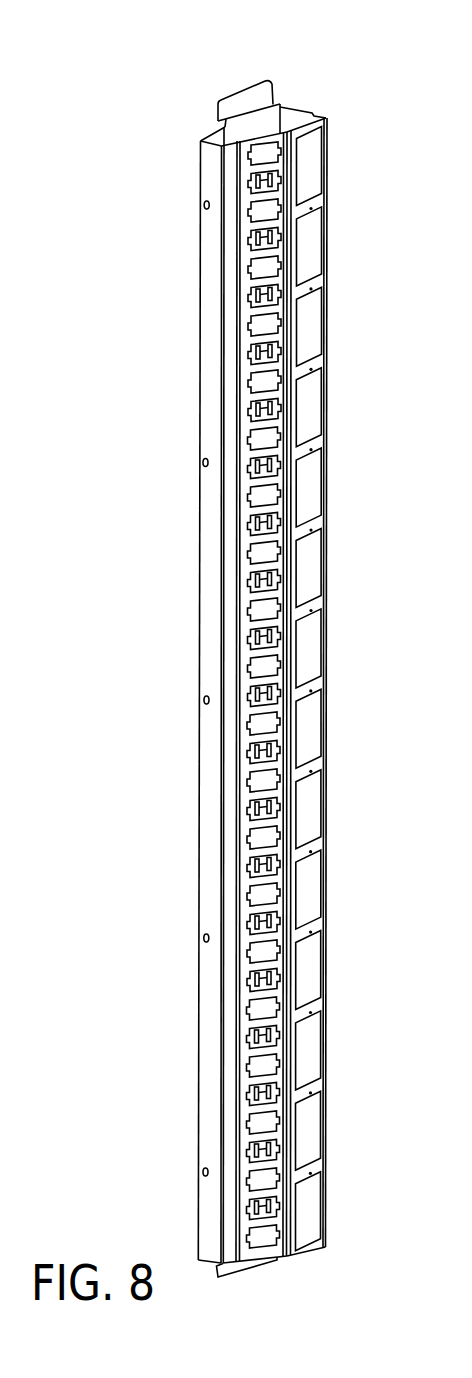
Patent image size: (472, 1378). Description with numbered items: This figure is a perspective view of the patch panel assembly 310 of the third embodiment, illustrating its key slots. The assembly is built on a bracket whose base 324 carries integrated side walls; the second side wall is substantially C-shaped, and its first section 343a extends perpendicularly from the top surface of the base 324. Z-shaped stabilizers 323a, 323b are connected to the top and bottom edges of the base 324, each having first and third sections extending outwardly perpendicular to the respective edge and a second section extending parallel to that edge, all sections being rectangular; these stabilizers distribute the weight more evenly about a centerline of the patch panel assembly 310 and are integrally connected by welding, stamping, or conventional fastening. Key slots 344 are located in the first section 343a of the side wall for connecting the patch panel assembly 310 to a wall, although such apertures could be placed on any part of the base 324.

The patch panel assembly 310 is at (223, 642).
The Z-shaped stabilizer 323a is at (263, 81).
The Z-shaped stabilizer 323b is at (267, 1262).
The base 324 is at (280, 101).
The first section of second side wall 343a is at (212, 180).
The key slots 344 is at (200, 362).